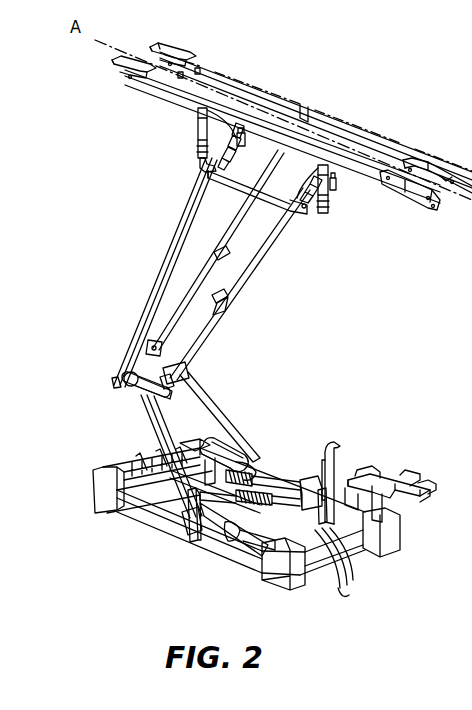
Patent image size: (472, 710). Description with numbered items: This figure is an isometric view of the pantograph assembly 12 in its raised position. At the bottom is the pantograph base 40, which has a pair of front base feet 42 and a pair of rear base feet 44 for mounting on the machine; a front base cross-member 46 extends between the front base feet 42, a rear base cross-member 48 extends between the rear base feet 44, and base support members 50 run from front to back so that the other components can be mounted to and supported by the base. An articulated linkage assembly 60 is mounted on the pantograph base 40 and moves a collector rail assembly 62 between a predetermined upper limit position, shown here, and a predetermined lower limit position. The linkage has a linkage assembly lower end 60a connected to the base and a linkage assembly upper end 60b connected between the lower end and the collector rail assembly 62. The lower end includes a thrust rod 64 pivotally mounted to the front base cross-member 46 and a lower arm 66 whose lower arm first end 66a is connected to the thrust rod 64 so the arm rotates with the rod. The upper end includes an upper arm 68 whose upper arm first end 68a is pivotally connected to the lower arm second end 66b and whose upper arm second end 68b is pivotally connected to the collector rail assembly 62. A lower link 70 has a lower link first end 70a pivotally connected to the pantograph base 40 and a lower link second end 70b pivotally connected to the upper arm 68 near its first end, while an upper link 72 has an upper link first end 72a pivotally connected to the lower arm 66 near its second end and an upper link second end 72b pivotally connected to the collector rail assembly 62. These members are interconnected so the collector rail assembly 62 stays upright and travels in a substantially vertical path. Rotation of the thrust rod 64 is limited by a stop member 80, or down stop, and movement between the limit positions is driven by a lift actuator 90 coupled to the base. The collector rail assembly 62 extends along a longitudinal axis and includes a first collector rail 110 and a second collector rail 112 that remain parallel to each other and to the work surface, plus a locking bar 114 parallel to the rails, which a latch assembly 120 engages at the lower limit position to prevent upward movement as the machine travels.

The pantograph assembly 12 is at (118, 170).
The pantograph base 40 is at (382, 586).
The front base feet 42 is at (95, 492).
The rear base feet 44 is at (222, 443).
The front base cross-member 46 is at (257, 550).
The rear base cross-member 48 is at (330, 507).
The base support members 50 is at (342, 584).
The articulated linkage assembly 60 is at (283, 310).
The linkage assembly lower end 60a is at (247, 392).
The linkage assembly upper end 60b is at (255, 282).
The collector rail assembly 62 is at (366, 122).
The thrust rod 64 is at (212, 522).
The lower arm 66 is at (145, 428).
The lower arm first end 66a is at (185, 527).
The lower arm second end 66b is at (137, 396).
The upper arm 68 is at (170, 250).
The upper arm first end 68a is at (124, 375).
The upper arm second end 68b is at (312, 200).
The lower link 70 is at (243, 475).
The lower link first end 70a is at (296, 494).
The lower link second end 70b is at (182, 370).
The upper link 72 is at (213, 253).
The upper link first end 72a is at (165, 338).
The upper link second end 72b is at (283, 148).
The stop member 80 is at (190, 540).
The lift actuator 90 is at (326, 475).
The first collector rail 110 is at (180, 85).
The second collector rail 112 is at (237, 84).
The locking bar 114 is at (297, 113).
The latch assembly 120 is at (330, 492).